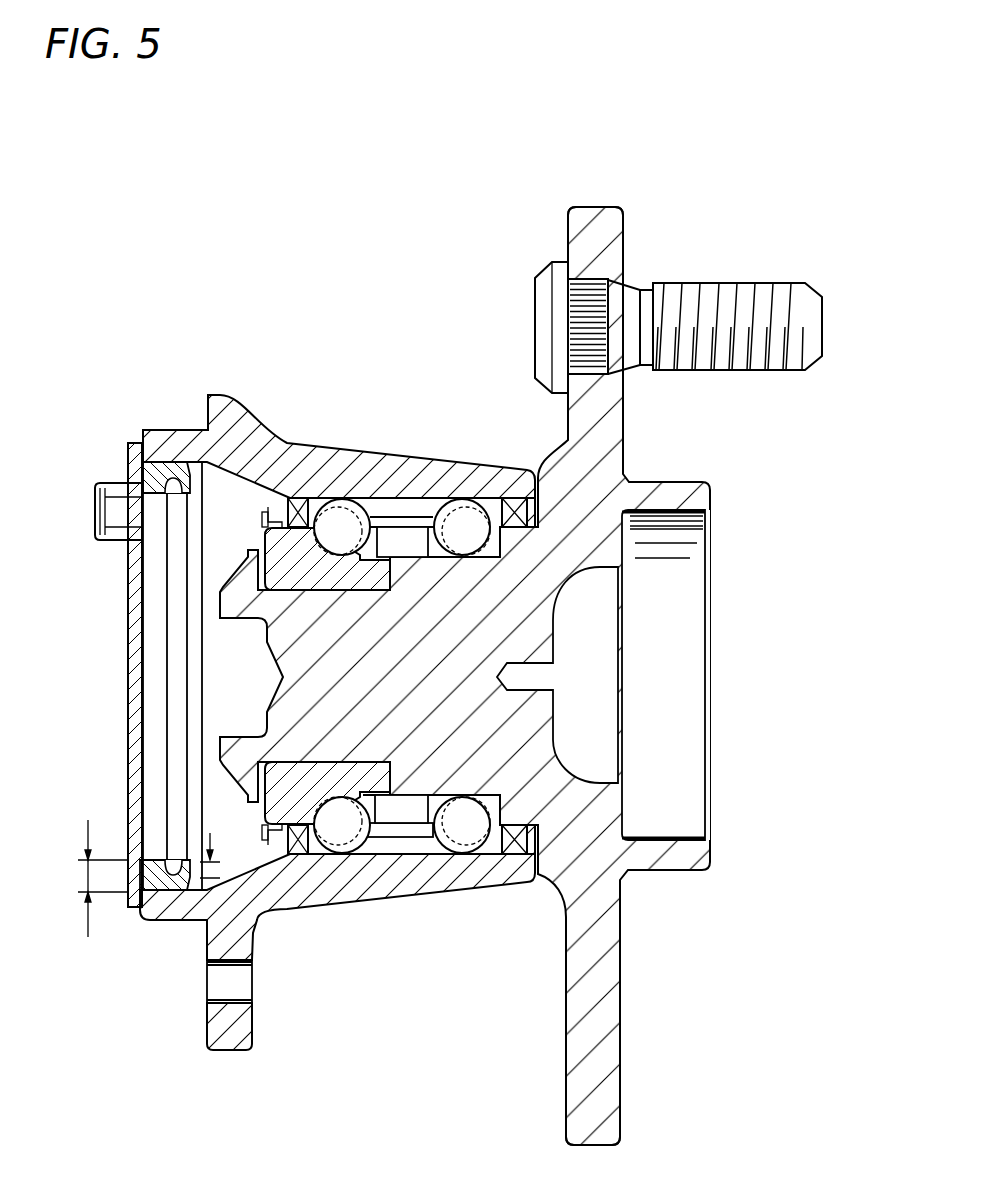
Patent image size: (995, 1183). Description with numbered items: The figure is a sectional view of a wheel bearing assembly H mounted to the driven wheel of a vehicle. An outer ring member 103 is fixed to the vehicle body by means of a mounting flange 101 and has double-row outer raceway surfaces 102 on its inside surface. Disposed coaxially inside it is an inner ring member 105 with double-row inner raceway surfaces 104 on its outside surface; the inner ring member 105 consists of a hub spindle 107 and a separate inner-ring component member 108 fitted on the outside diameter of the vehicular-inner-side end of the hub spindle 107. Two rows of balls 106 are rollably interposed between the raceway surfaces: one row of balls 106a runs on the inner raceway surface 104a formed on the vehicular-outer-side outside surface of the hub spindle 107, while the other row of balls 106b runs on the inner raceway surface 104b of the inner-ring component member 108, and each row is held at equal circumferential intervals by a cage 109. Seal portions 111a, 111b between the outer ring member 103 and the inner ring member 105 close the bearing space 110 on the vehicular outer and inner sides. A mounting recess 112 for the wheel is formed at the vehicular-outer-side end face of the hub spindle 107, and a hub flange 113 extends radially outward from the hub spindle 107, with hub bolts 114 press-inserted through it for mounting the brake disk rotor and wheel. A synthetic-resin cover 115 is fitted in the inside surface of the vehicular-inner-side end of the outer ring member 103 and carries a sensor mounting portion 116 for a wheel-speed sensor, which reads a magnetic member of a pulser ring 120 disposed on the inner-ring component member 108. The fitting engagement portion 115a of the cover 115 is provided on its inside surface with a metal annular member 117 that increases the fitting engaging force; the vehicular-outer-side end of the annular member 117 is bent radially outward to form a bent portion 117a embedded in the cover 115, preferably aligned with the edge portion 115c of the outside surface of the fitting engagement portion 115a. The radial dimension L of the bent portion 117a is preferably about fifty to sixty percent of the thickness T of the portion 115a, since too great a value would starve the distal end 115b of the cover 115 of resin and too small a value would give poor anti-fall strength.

The bearing assembly H is at (326, 240).
The mounting flange 101 is at (215, 1030).
The outer raceway surfaces 102 is at (420, 480).
The outer ring member 103 is at (262, 445).
The inner raceway surfaces 104 is at (538, 1027).
The inner raceway surface 104a is at (470, 500).
The inner raceway surface 104b is at (340, 517).
The inner ring member 105 is at (372, 990).
The balls 106 is at (487, 330).
The balls 106a is at (447, 497).
The balls 106b is at (338, 500).
The hub spindle 107 is at (267, 863).
The inner-ring component member 108 is at (297, 803).
The cage 109 is at (402, 817).
The bearing space 110 is at (423, 850).
The seal portion 111a is at (520, 480).
The seal portion 111b is at (298, 495).
The mounting recess 112 is at (697, 640).
The hub flange 113 is at (602, 223).
The hub bolts 114 is at (735, 310).
The cover 115 is at (128, 640).
The fitting engagement portion 115a is at (127, 462).
The distal end 115b is at (100, 492).
The edge portion 115c is at (187, 465).
The sensor mounting portion 116 is at (96, 545).
The annular member 117 is at (130, 465).
The bent portion 117a is at (166, 460).
The pulser ring 120 is at (250, 503).
The radial dimension L is at (253, 963).
The thickness T is at (78, 878).